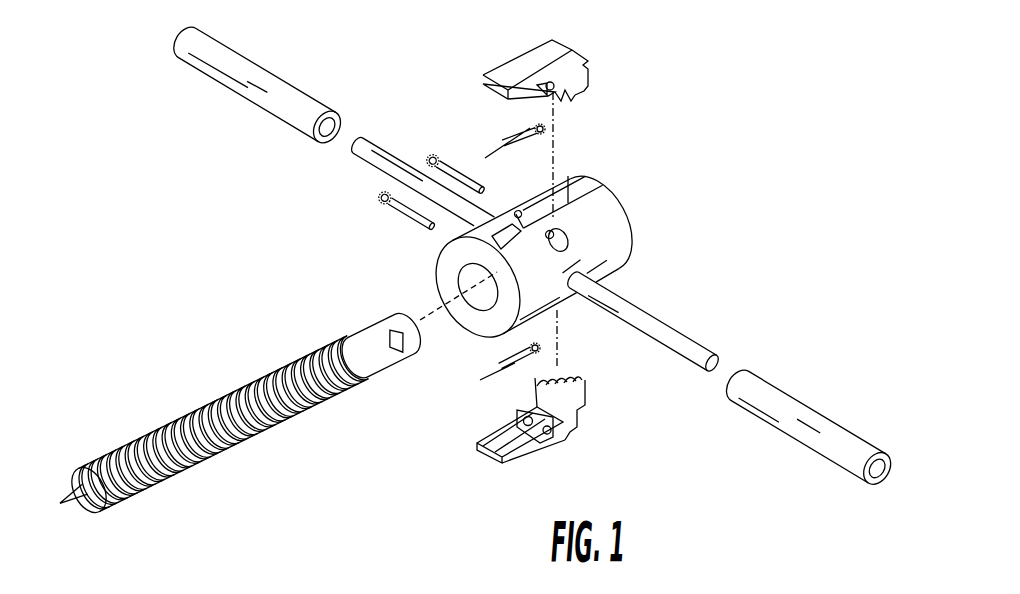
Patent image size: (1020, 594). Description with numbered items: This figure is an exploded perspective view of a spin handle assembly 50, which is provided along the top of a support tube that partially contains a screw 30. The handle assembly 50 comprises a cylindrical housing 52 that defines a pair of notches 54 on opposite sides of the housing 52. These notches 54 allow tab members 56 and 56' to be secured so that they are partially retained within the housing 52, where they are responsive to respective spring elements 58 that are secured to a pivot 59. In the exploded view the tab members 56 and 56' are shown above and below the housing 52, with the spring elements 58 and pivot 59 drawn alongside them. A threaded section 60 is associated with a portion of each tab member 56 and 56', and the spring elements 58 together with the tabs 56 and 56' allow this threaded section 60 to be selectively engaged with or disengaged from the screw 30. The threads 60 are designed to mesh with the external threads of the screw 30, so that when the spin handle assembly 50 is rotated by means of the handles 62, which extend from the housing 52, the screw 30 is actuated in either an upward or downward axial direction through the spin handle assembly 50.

The screw 30 is at (240, 447).
The spin handle assembly 50 is at (688, 194).
The cylindrical housing 52 is at (627, 245).
The notches 54 is at (577, 177).
The tab member 56 is at (566, 61).
The tab member 56' is at (542, 432).
The spring elements 58 is at (510, 140).
The pivot 59 is at (537, 123).
The threaded section 60 is at (578, 89).
The handles 62 is at (837, 418).